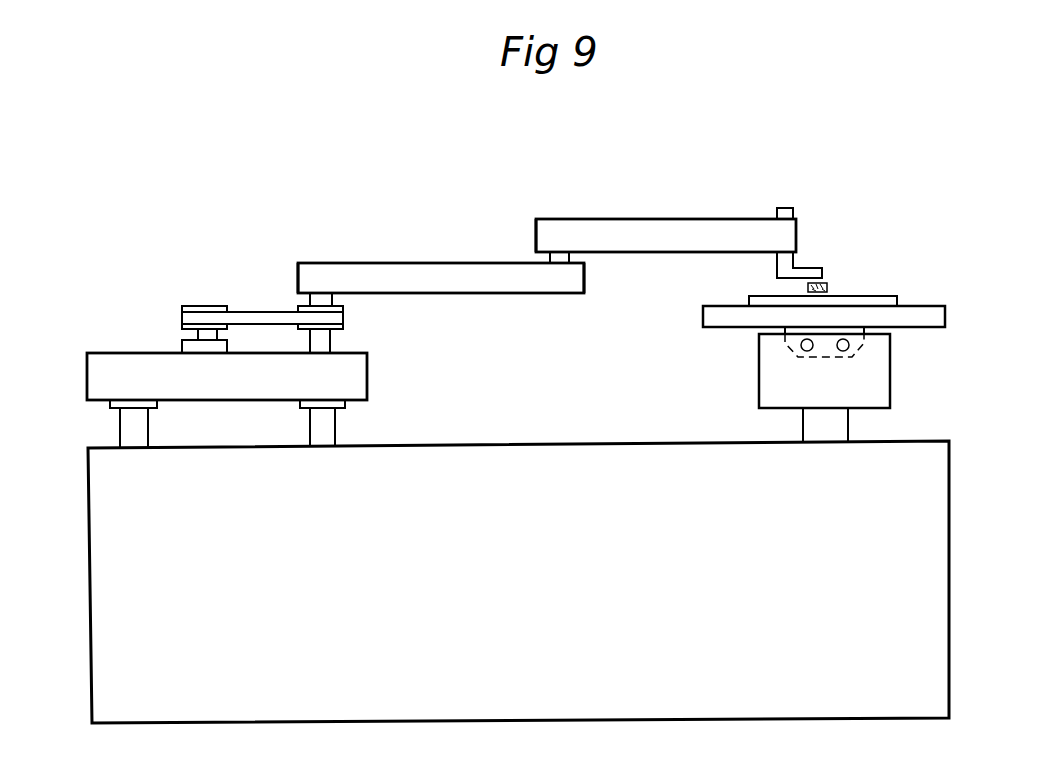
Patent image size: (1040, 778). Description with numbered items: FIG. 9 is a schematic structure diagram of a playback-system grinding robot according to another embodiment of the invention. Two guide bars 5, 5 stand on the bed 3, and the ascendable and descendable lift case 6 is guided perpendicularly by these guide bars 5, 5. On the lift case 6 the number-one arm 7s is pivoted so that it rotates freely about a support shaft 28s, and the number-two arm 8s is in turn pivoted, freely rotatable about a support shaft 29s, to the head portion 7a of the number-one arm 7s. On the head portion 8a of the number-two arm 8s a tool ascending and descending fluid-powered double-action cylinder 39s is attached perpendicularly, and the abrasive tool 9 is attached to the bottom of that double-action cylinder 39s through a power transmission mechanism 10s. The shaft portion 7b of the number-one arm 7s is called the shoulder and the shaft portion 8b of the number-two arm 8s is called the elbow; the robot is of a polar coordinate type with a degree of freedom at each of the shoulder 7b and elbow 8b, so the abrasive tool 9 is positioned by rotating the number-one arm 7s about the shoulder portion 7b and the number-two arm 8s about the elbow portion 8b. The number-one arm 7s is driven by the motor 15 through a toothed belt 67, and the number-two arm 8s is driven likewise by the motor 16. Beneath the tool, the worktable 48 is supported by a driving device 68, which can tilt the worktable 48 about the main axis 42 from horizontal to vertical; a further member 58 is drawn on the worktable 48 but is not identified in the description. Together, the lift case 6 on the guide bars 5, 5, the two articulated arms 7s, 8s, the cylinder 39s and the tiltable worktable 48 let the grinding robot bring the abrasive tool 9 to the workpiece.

The bed 3 is at (940, 513).
The guide bar 5 is at (140, 432).
The lift case 6 is at (365, 378).
The No. 1 arm 7s is at (464, 283).
The head portion of No. 1 arm 7a is at (564, 299).
The shaft portion of No. 1 arm 7b is at (337, 259).
The No. 2 arm 8s is at (683, 231).
The head portion of No. 2 arm 8a is at (783, 195).
The shaft portion of No. 2 arm 8b is at (558, 213).
The abrasive tool 9 is at (828, 287).
The power transmission mechanism 10s is at (802, 277).
The motor 15 is at (182, 351).
The motor 16 is at (204, 346).
The support shaft 28s is at (333, 343).
The support shaft 29s is at (569, 256).
The tool ascending/descending fluid-powered double-action cylinder 39s is at (790, 260).
The main axis 42 is at (827, 430).
The worktable 48 is at (945, 313).
The plate 58 is at (885, 298).
The toothed belt 67 is at (258, 312).
The driving device 68 is at (877, 372).